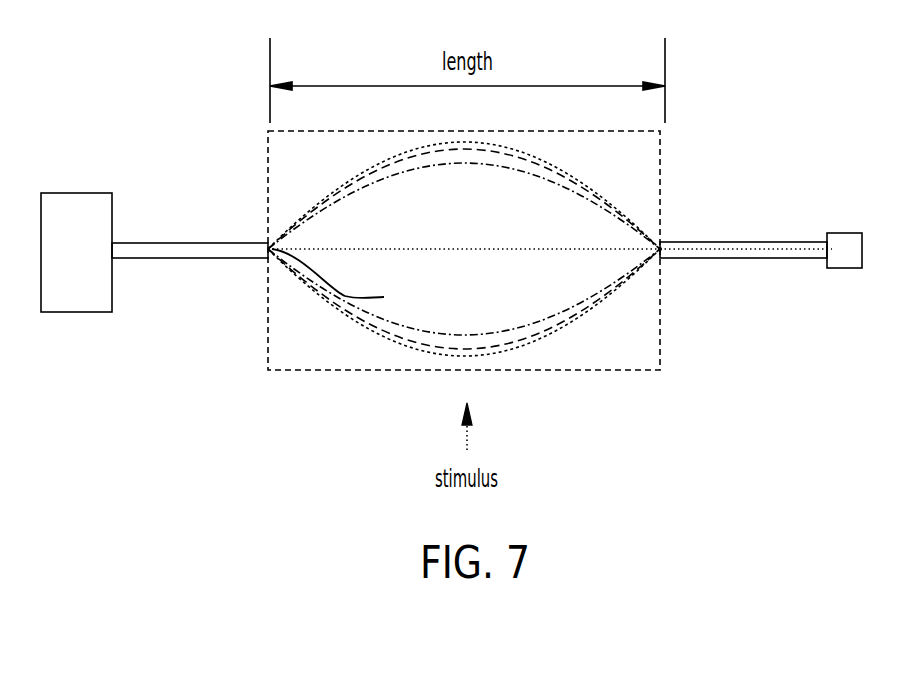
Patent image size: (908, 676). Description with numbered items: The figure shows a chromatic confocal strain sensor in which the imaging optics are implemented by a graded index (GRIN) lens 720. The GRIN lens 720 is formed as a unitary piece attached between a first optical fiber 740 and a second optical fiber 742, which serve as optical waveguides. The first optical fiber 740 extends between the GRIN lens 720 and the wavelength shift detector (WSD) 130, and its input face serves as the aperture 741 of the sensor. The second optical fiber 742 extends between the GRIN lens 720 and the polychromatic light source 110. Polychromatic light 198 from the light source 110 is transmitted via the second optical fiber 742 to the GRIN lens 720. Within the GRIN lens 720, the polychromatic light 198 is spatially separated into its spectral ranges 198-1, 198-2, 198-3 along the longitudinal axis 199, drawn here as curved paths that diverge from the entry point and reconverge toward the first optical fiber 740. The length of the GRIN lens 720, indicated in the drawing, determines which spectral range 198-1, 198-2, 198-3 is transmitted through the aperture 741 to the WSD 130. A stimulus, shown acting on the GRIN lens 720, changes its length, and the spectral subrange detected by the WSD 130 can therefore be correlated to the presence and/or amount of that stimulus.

The wavelength shift detector (WSD) 130 is at (80, 200).
The first optical fiber 740 is at (200, 248).
The graded index (GRIN) lens 720 is at (597, 372).
The spectral range 198-1 is at (345, 178).
The spectral range 198-2 is at (306, 204).
The spectral range 198-3 is at (410, 176).
The longitudinal axis 199 is at (478, 248).
The aperture 741 is at (345, 280).
The polychromatic light 198 is at (680, 230).
The second optical fiber 742 is at (773, 243).
The polychromatic light source 110 is at (845, 240).